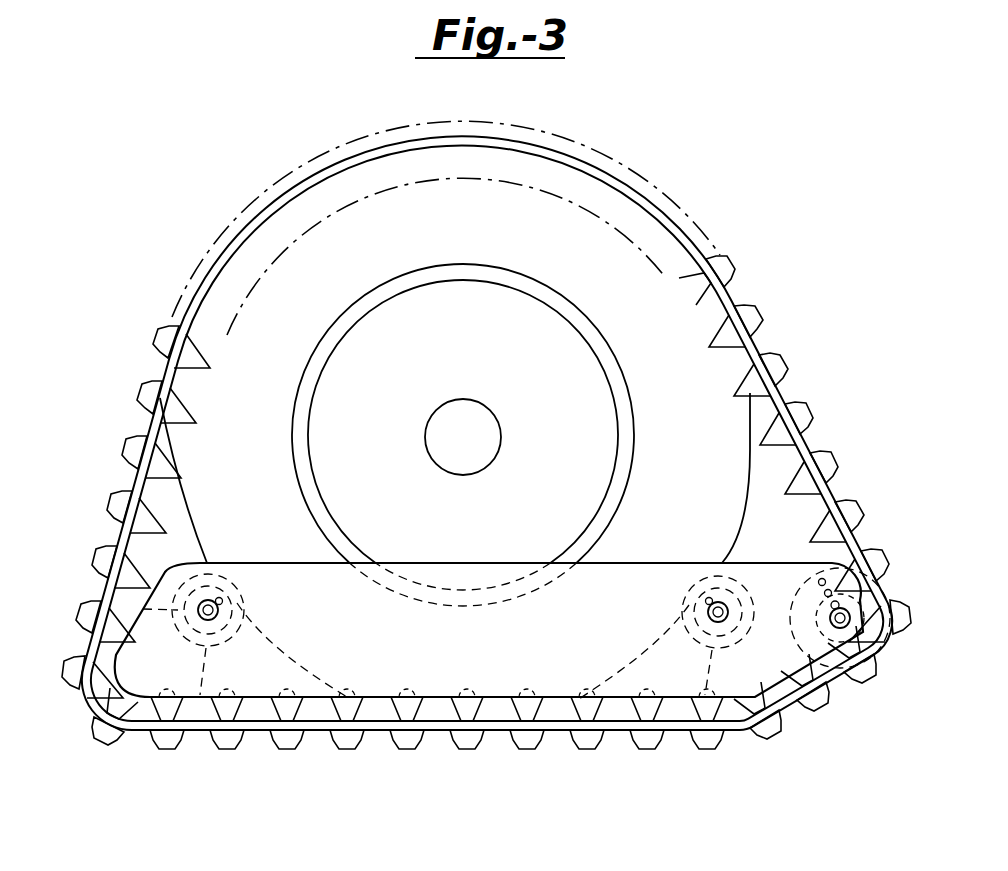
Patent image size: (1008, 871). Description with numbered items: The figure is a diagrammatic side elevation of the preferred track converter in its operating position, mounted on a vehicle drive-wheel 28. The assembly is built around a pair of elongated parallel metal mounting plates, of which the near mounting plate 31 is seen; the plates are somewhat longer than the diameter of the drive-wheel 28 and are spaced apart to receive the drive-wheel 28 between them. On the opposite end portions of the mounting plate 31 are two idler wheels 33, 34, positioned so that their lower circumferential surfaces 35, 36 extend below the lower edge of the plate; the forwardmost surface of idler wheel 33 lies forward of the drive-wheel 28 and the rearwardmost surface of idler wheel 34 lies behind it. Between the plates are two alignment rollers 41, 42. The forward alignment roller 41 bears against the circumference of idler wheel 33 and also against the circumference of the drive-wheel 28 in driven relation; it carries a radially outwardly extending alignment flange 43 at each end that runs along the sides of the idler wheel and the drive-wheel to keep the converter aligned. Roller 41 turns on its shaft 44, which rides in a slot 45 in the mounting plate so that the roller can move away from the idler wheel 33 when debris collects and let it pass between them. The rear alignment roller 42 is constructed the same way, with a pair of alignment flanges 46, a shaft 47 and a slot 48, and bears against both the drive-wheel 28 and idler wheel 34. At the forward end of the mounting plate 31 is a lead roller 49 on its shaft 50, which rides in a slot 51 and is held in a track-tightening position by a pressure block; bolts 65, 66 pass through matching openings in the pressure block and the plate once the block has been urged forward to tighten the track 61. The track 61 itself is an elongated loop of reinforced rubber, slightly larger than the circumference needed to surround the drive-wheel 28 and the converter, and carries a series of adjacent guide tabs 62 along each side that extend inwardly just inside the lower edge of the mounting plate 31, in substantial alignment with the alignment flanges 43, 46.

The drive-wheel 28 is at (444, 236).
The mounting plate 31 is at (452, 664).
The idler wheel 33 is at (733, 713).
The idler wheel 34 is at (128, 606).
The lower circumferential surface 35 is at (764, 737).
The lower circumferential surface 36 is at (187, 699).
The alignment roller 41 is at (683, 661).
The alignment roller 42 is at (239, 661).
The alignment flange 43 is at (759, 560).
The shaft 44 is at (708, 609).
The slot 45 is at (709, 598).
The alignment flange 46 is at (194, 556).
The shaft 47 is at (222, 606).
The slot 48 is at (222, 599).
The lead roller 49 is at (836, 660).
The shaft 50 is at (867, 647).
The slot 51 is at (831, 603).
The track 61 is at (738, 280).
The guide tab 62 is at (709, 347).
The bolt 65 is at (825, 580).
The bolt 66 is at (831, 592).